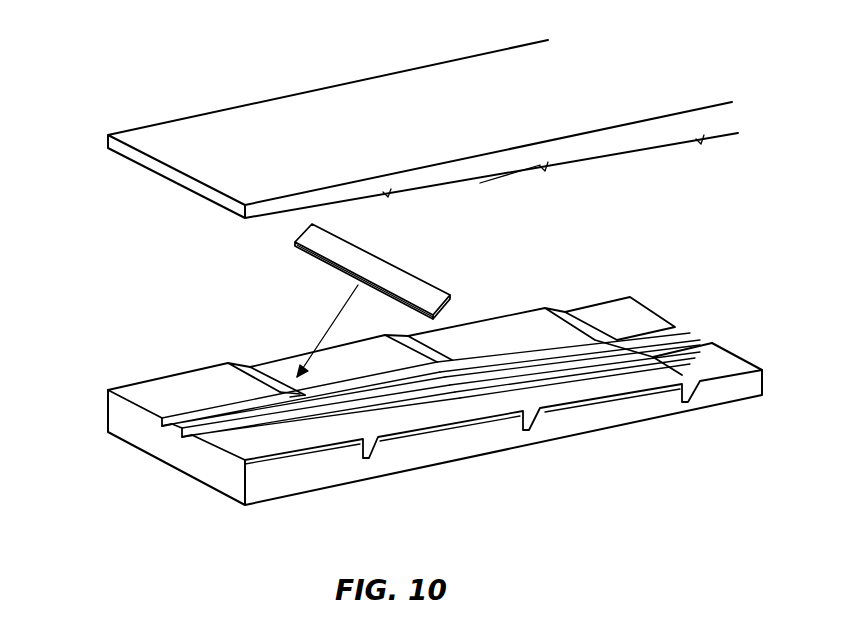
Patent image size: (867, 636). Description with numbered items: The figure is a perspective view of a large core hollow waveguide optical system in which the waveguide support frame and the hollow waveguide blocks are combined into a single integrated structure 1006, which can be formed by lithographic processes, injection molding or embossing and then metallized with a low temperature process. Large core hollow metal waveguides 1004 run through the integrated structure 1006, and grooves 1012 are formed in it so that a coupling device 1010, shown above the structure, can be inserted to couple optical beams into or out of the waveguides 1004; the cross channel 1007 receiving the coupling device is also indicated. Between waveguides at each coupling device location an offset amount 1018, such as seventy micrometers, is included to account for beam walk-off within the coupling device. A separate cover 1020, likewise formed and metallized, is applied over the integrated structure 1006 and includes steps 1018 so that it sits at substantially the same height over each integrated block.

The waveguide 1004 is at (162, 418).
The integrated structure 1006 is at (293, 480).
The cross channel 1007 is at (297, 380).
The coupling device 1010 is at (397, 277).
The groove 1012 is at (373, 452).
The offset amount 1018 is at (498, 169).
The cover 1020 is at (175, 135).